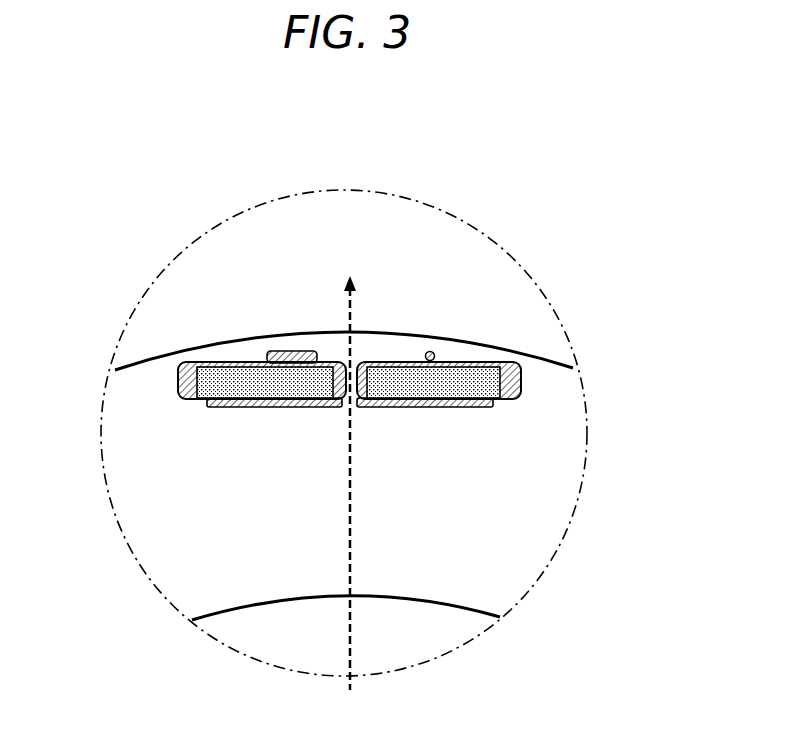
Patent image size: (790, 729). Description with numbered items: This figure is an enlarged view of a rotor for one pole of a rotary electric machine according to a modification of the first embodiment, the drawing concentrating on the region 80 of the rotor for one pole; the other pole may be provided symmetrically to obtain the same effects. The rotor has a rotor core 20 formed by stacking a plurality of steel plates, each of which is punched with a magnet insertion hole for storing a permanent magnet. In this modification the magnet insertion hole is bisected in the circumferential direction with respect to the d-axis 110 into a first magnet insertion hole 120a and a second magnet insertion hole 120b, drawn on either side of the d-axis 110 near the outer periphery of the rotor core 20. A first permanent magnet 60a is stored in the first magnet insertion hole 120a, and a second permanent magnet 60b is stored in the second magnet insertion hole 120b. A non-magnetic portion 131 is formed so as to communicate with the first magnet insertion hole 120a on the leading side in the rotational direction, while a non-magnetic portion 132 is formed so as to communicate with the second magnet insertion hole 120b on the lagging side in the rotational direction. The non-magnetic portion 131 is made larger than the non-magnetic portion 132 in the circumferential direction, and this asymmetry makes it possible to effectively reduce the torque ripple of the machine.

The rotor core 20 is at (502, 514).
The region 80 is at (263, 194).
The d-axis 110 is at (350, 318).
The first magnet insertion hole 120a is at (178, 381).
The second magnet insertion hole 120b is at (520, 385).
The first permanent magnet 60a is at (230, 388).
The second permanent magnet 60b is at (458, 382).
The non-magnetic portion 131 is at (277, 352).
The non-magnetic portion 132 is at (440, 357).